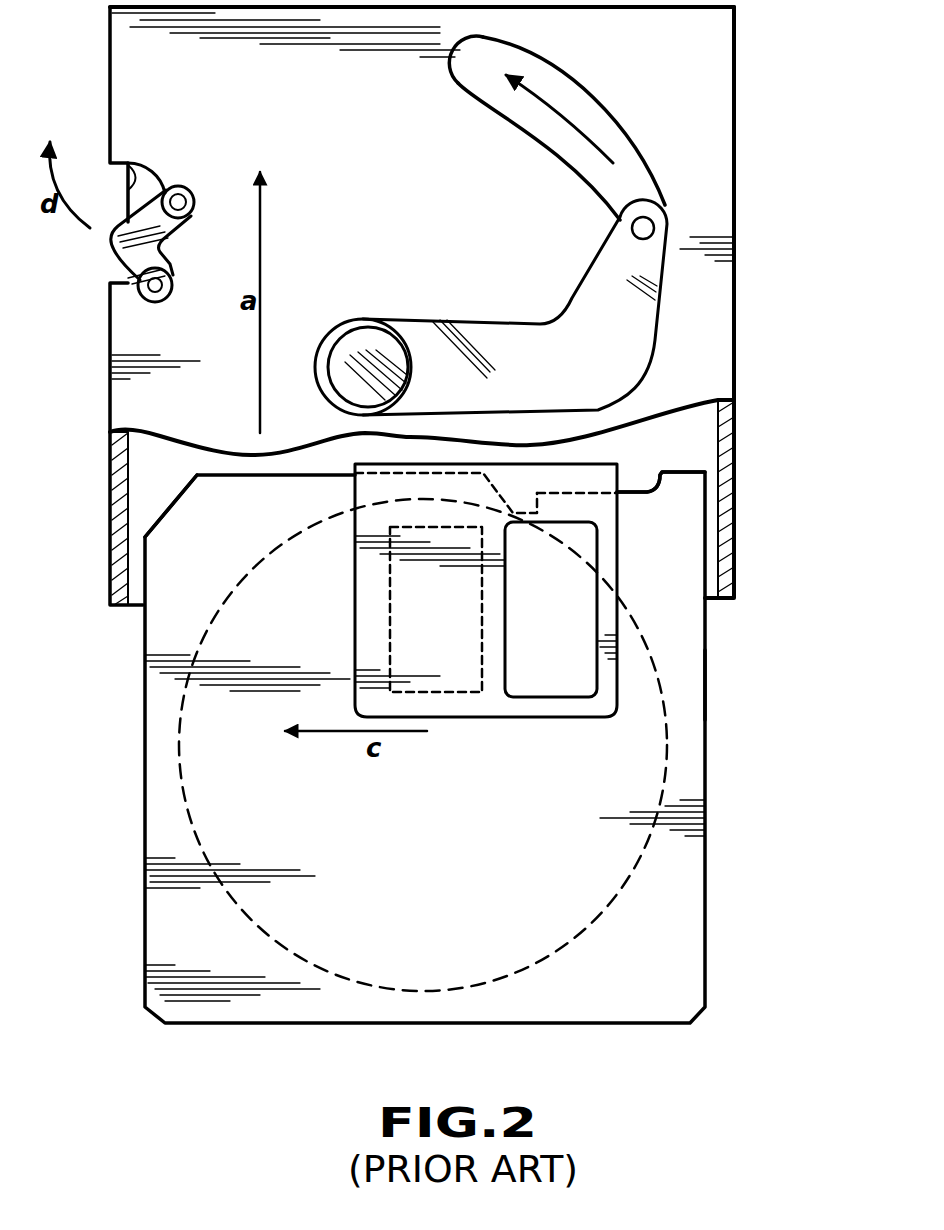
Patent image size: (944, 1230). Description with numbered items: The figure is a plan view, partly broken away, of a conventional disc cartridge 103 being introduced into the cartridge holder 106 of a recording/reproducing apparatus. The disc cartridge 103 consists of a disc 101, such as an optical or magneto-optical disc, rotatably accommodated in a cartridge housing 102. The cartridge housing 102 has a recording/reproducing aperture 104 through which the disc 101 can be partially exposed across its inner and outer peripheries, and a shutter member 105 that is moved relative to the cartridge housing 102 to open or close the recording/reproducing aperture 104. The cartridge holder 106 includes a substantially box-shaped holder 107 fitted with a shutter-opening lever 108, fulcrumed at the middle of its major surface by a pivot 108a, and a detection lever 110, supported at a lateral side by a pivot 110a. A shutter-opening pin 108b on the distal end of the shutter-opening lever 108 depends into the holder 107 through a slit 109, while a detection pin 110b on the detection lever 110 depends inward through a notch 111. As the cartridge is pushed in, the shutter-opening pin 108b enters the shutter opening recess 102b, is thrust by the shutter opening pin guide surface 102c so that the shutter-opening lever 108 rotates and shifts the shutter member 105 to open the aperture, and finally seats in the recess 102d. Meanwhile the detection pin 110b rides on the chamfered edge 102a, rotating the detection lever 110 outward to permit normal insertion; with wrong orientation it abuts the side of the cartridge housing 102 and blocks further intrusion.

The disc 101 is at (585, 897).
The cartridge housing 102 is at (430, 678).
The chamfered edge 102a is at (175, 486).
The shutter opening recess 102b is at (650, 480).
The shutter opening pin guide surface 102c is at (593, 492).
The recess for shutter-opening pin 102d is at (537, 502).
The disc cartridge 103 is at (716, 693).
The recording/reproducing aperture 104 is at (390, 583).
The shutter member 105 is at (522, 707).
The cartridge holder 106 is at (747, 114).
The holder 107 is at (705, 345).
The shutter-opening lever 108 is at (520, 257).
The pivot 108a is at (360, 345).
The shutter-opening pin 108b is at (661, 216).
The slit 109 is at (541, 121).
The detection lever 110 is at (132, 209).
The pivot 110a is at (178, 194).
The detection pin 110b is at (148, 292).
The notch 111 is at (125, 188).